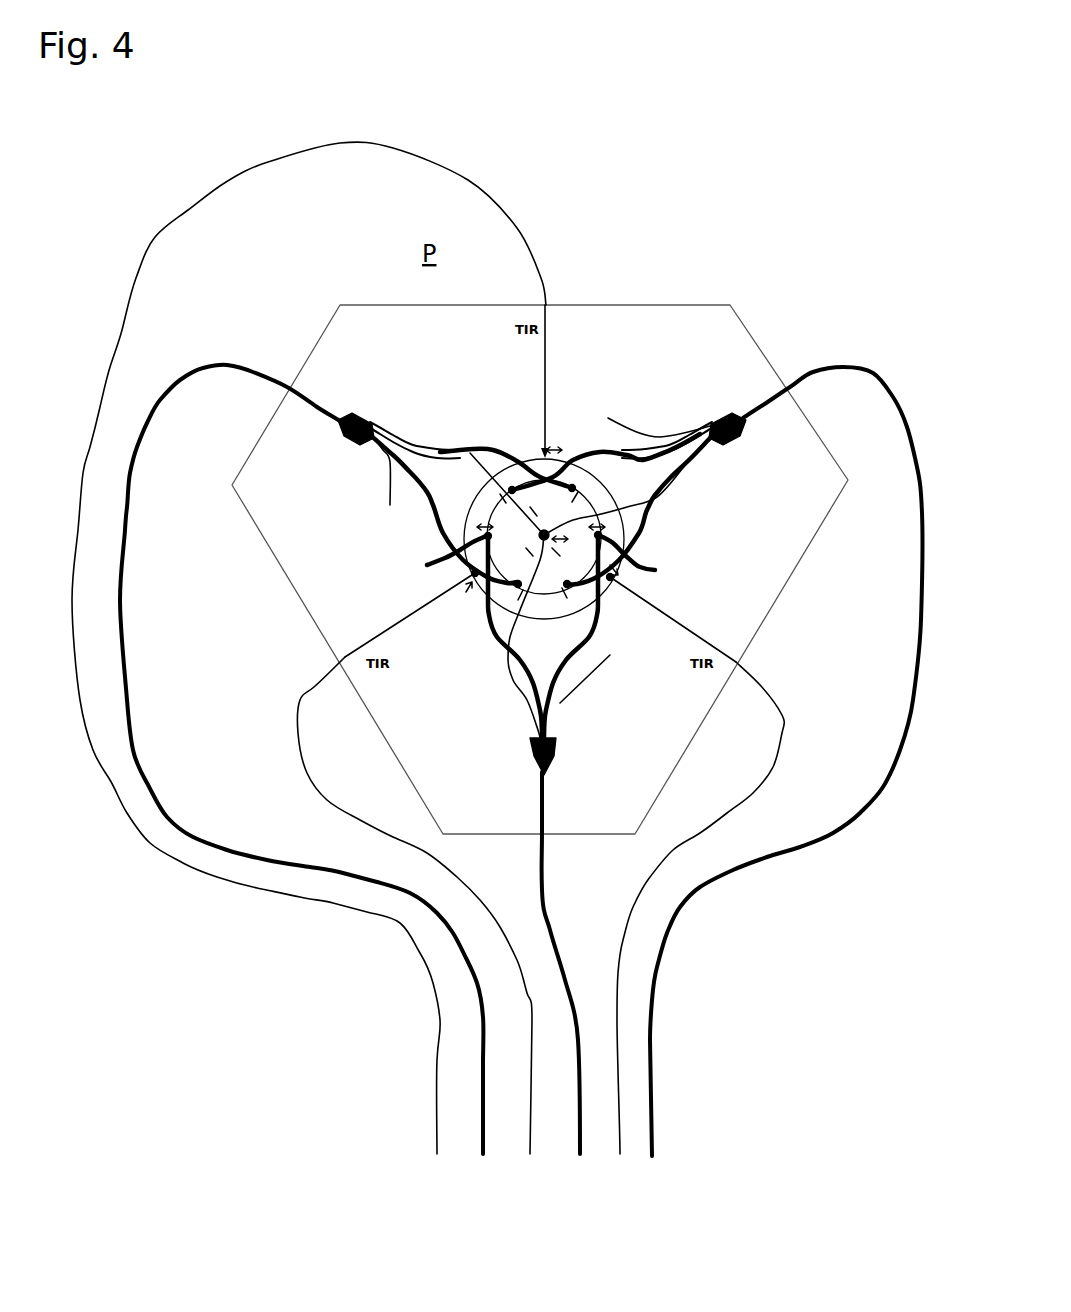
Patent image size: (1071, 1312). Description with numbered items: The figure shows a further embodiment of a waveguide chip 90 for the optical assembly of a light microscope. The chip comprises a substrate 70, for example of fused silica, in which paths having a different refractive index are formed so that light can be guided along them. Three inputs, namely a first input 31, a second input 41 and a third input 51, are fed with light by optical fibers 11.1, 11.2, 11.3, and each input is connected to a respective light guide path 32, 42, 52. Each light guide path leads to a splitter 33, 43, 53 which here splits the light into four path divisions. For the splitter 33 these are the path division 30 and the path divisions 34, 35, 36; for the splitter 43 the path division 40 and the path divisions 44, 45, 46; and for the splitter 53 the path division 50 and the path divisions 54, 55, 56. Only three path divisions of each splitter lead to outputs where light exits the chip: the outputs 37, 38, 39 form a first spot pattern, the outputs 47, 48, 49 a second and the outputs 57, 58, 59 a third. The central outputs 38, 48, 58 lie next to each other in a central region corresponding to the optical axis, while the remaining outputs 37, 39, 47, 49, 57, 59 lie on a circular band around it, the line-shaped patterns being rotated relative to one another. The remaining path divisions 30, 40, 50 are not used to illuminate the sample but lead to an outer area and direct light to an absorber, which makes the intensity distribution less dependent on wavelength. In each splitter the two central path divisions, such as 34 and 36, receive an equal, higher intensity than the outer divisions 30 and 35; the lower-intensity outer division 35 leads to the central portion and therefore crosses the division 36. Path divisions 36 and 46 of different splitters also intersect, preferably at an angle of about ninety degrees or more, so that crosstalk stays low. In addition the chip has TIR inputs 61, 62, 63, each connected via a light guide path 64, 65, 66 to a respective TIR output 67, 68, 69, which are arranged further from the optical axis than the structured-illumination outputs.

The optical fiber 11.1 is at (656, 1085).
The optical fiber 11.2 is at (580, 1152).
The optical fiber 11.3 is at (484, 1152).
The path division 30 is at (650, 427).
The first input 31 is at (790, 388).
The light guide path 32 is at (740, 420).
The splitter 33 is at (728, 428).
The path division 34 is at (615, 450).
The path division 35 is at (690, 485).
The path division 36 is at (665, 490).
The output 37 is at (522, 462).
The central output 38 is at (543, 530).
The output 39 is at (592, 612).
The path division 40 is at (603, 680).
The second input 41 is at (547, 855).
The light guide path 42 is at (548, 800).
The splitter 43 is at (556, 758).
The path division 44 is at (530, 690).
The path division 45 is at (506, 664).
The path division 46 is at (587, 648).
The output 47 is at (427, 565).
The central output 48 is at (547, 540).
The output 49 is at (607, 570).
The path division 50 is at (386, 463).
The third input 51 is at (300, 392).
The light guide path 52 is at (352, 418).
The splitter 53 is at (368, 430).
The path division 54 is at (452, 447).
The path division 55 is at (402, 448).
The path division 56 is at (436, 512).
The output 57 is at (553, 449).
The central output 58 is at (538, 540).
The output 59 is at (468, 594).
The TIR input 61 is at (742, 658).
The TIR input 62 is at (545, 300).
The TIR input 63 is at (340, 657).
The light guide path 64 is at (700, 630).
The light guide path 65 is at (548, 358).
The light guide path 66 is at (392, 625).
The TIR output 67 is at (615, 578).
The TIR output 68 is at (543, 453).
The TIR output 69 is at (473, 574).
The substrate 70 is at (413, 734).
The waveguide chip 90 is at (623, 298).